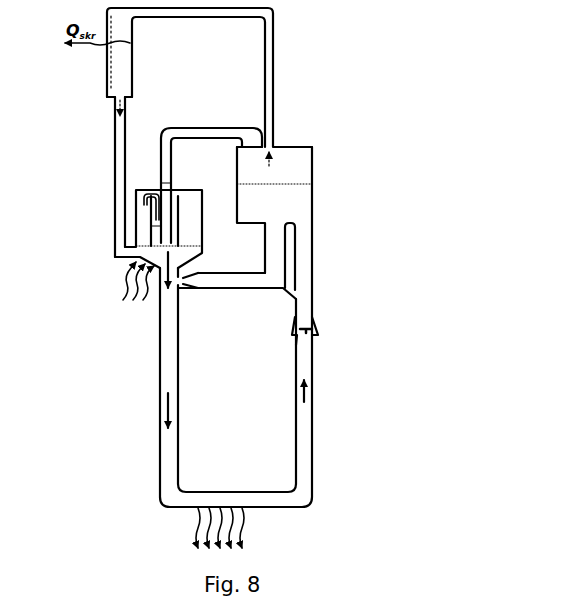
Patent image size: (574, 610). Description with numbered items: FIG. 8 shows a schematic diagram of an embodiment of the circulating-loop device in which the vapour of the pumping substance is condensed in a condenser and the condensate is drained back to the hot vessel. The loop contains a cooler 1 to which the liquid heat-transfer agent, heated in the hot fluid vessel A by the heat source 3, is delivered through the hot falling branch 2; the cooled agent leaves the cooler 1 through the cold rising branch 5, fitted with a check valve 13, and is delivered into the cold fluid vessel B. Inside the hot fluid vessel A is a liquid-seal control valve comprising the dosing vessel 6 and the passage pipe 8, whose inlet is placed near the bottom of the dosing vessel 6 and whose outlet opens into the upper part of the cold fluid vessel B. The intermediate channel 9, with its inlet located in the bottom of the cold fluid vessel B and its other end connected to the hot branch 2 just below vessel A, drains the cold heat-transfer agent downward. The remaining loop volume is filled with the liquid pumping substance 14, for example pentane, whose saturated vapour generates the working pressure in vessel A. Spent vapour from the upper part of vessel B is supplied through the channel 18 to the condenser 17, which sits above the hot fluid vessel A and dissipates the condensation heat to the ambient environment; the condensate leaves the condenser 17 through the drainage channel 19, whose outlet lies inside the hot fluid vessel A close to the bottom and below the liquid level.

The cooler 1 is at (243, 522).
The hot falling branch 2 is at (160, 410).
The heat source 3 is at (120, 291).
The cold rising branch 5 is at (313, 432).
The dosing vessel 6 is at (150, 193).
The passage pipe 8 is at (160, 167).
The intermediate channel 9 is at (263, 286).
The check valve 13 is at (148, 203).
The liquid pumping substance 14 is at (148, 242).
The condenser 17 is at (108, 90).
The channel 18 is at (265, 90).
The drainage channel 19 is at (127, 132).